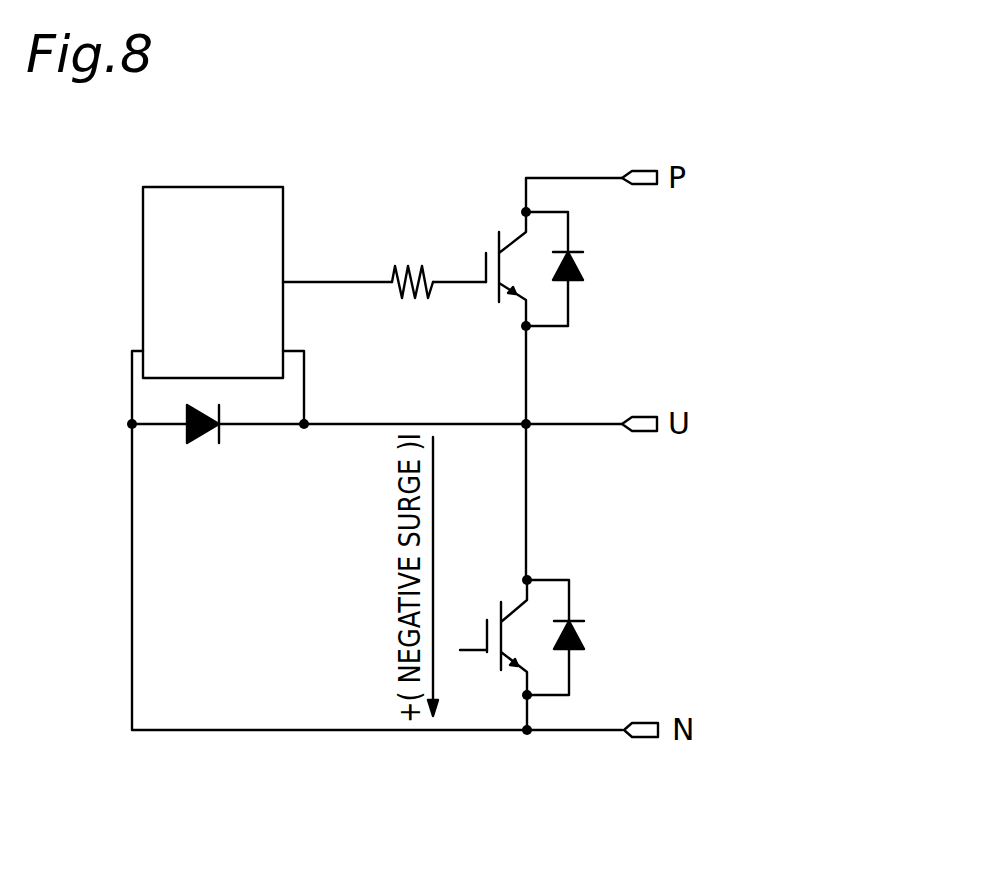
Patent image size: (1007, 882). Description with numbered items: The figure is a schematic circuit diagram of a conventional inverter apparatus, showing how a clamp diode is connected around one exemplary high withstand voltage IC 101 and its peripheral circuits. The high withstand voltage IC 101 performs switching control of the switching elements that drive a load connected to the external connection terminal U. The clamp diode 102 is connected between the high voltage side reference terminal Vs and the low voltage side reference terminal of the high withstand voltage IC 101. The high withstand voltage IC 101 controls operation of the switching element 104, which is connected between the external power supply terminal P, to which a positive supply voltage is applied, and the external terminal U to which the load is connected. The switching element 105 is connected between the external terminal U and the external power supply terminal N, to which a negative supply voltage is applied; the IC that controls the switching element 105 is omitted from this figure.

The high withstand voltage IC 101 is at (214, 187).
The clamp diode 102 is at (200, 440).
The switching element 104 is at (492, 296).
The switching element 105 is at (488, 666).